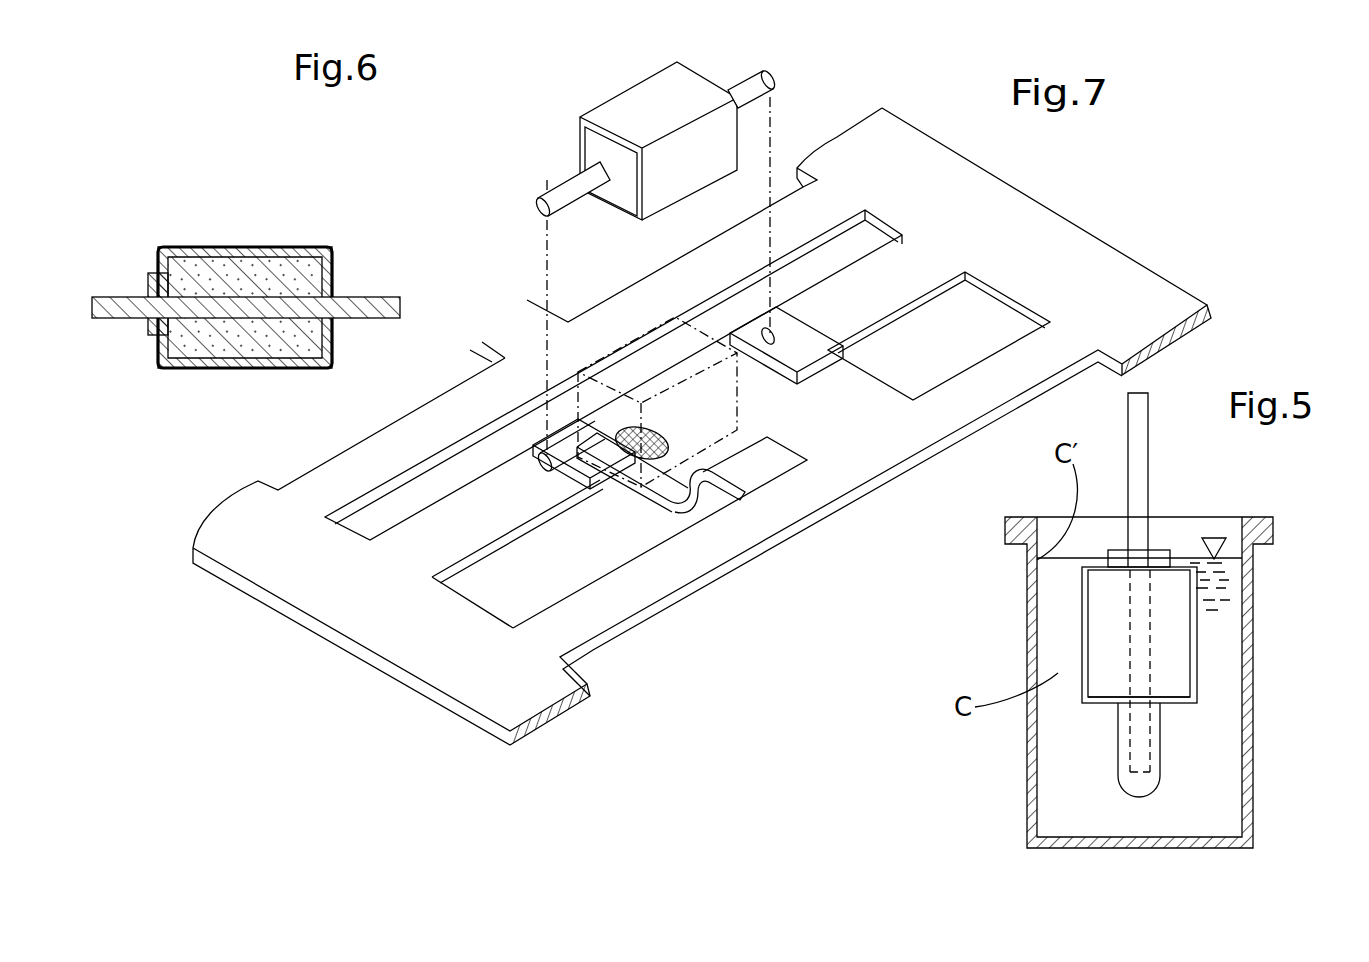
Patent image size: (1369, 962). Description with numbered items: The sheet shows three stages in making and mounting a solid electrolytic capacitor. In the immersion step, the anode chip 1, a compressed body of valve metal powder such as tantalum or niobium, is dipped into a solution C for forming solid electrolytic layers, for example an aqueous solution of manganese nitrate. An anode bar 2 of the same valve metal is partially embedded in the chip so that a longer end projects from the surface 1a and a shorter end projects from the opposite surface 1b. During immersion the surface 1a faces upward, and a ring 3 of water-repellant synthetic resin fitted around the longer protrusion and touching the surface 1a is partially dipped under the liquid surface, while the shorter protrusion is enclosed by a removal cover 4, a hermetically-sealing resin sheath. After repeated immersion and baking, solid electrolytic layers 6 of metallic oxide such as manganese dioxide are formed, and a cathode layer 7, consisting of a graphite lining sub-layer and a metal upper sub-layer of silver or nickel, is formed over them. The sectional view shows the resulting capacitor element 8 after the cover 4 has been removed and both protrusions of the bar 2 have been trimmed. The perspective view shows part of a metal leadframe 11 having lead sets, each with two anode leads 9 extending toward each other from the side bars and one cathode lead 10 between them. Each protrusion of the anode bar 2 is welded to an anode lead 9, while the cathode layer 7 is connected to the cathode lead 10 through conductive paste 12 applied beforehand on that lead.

In FIG. 6, the anode chip 1 is at (314, 247).
In FIG. 7, the anode chip 1 is at (590, 152).
In FIG. 5, the anode chip 1 is at (1191, 644).
In FIG. 6, the surface of the chip 1a is at (148, 270).
In FIG. 5, the surface of the chip 1a is at (1098, 562).
In FIG. 6, the opposite surface of the chip 1b is at (333, 277).
In FIG. 6, the anode bar 2 is at (385, 293).
In FIG. 7, the anode bar 2 is at (568, 190).
In FIG. 5, the anode bar 2 is at (1150, 447).
In FIG. 6, the ring 3 is at (145, 273).
In FIG. 5, the ring 3 is at (1148, 550).
In FIG. 5, the removal cover 4 is at (1157, 795).
In FIG. 6, the solid electrolytic layers 6 is at (258, 248).
In FIG. 5, the solid electrolytic layers 6 is at (1198, 692).
In FIG. 6, the cathode layer 7 is at (223, 247).
In FIG. 7, the cathode layer 7 is at (652, 97).
In FIG. 6, the capacitor element 8 is at (296, 212).
In FIG. 7, the capacitor element 8 is at (601, 88).
In FIG. 7, the anode leads 9 is at (470, 497).
In FIG. 7, the cathode lead 10 is at (667, 490).
In FIG. 7, the leadframe 11 is at (1114, 225).
In FIG. 7, the conductive paste 12 is at (717, 480).